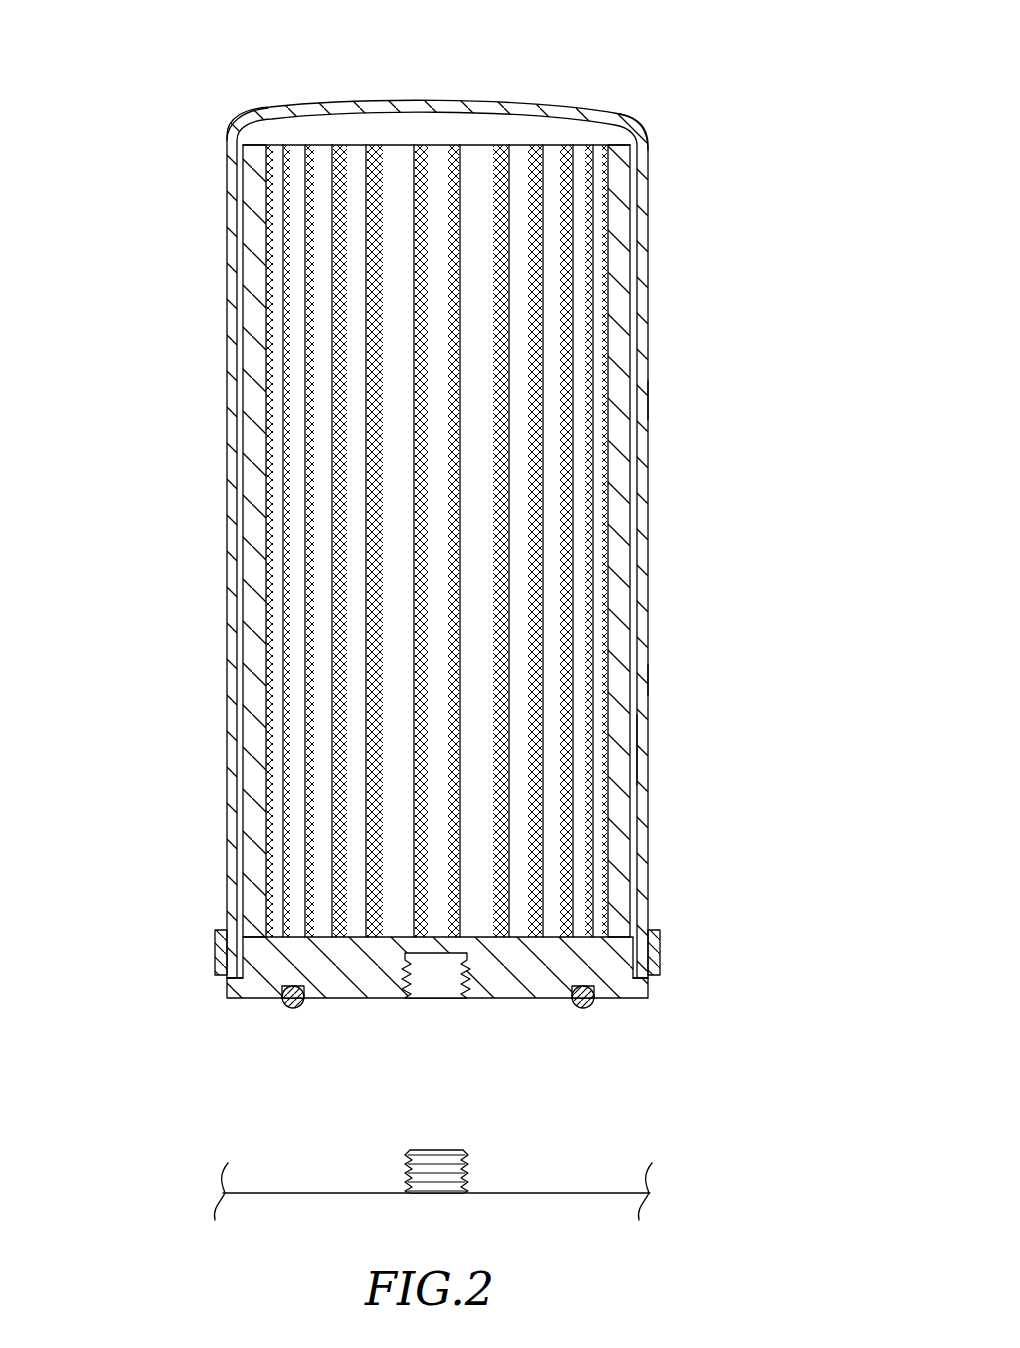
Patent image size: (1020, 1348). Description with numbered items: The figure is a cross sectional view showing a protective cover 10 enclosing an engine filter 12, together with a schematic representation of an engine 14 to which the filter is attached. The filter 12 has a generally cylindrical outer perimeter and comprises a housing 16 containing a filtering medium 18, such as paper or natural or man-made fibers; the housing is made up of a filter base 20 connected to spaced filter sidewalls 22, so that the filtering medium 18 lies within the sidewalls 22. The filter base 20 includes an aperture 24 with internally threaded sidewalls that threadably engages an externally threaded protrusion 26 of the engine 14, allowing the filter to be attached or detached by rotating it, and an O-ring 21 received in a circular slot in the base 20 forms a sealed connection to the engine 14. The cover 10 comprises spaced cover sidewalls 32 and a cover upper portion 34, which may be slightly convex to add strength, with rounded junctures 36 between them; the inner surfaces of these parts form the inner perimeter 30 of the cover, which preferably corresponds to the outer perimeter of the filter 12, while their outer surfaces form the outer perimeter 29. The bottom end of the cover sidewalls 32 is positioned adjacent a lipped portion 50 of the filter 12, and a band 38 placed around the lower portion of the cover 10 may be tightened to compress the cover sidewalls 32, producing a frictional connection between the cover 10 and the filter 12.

The protective cover 10 is at (214, 252).
The engine filter 12 is at (625, 118).
The engine 14 is at (268, 1193).
The housing 16 is at (665, 543).
The filtering medium 18 is at (556, 222).
The filter base 20 is at (509, 998).
The O-ring 21 is at (296, 1008).
The filter sidewalls 22 is at (245, 443).
The aperture 24 is at (441, 999).
The externally threaded protrusion 26 is at (472, 1183).
The outer perimeter 29 is at (665, 392).
The inner perimeter 30 is at (637, 780).
The cover sidewalls 32 is at (648, 680).
The cover upper portion 34 is at (535, 98).
The junctures 36 is at (228, 125).
The band 38 is at (215, 952).
The lipped portion 50 is at (648, 989).